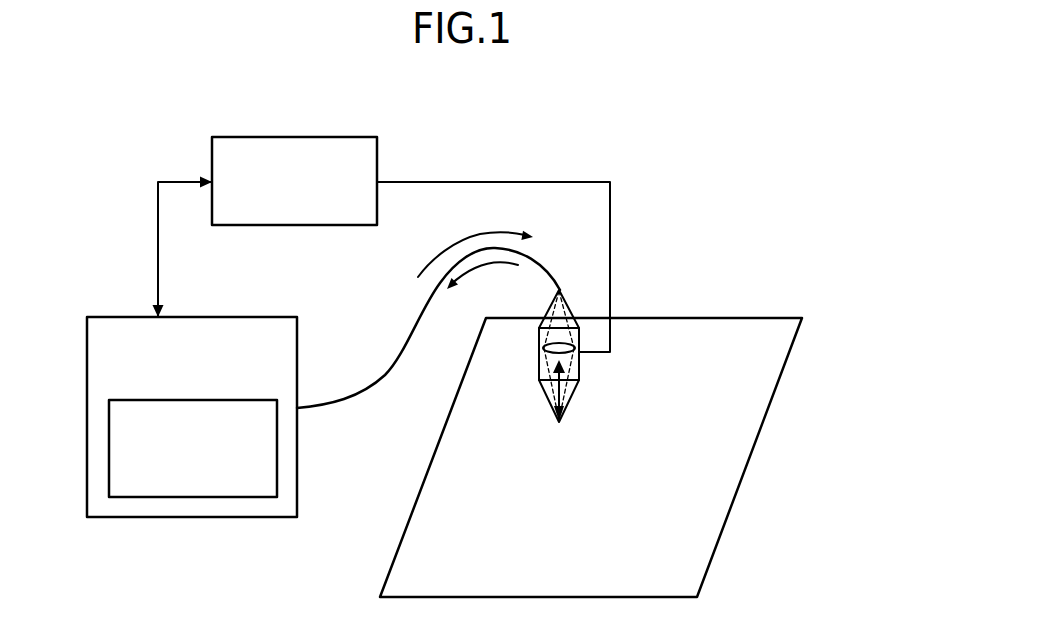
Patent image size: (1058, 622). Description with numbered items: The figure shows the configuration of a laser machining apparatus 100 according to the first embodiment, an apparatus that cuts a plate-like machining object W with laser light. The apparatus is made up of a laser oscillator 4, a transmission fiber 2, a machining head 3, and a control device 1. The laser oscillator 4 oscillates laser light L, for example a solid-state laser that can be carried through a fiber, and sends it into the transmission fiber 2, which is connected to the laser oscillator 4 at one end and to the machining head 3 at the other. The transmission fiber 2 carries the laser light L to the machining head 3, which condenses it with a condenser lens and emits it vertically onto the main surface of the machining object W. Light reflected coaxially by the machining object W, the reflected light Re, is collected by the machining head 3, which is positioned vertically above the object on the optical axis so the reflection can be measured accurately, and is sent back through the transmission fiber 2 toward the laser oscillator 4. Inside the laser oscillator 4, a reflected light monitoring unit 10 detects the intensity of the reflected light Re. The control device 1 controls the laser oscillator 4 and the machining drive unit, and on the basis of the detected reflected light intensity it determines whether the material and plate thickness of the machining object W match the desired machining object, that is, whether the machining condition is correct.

The control device 1 is at (378, 152).
The transmission fiber 2 is at (363, 397).
The machining head 3 is at (572, 307).
The laser oscillator 4 is at (235, 317).
The reflected light monitoring unit 10 is at (237, 400).
The laser machining apparatus 100 is at (672, 133).
The laser light L is at (468, 238).
The reflected light Re is at (487, 263).
The machining object W is at (770, 331).